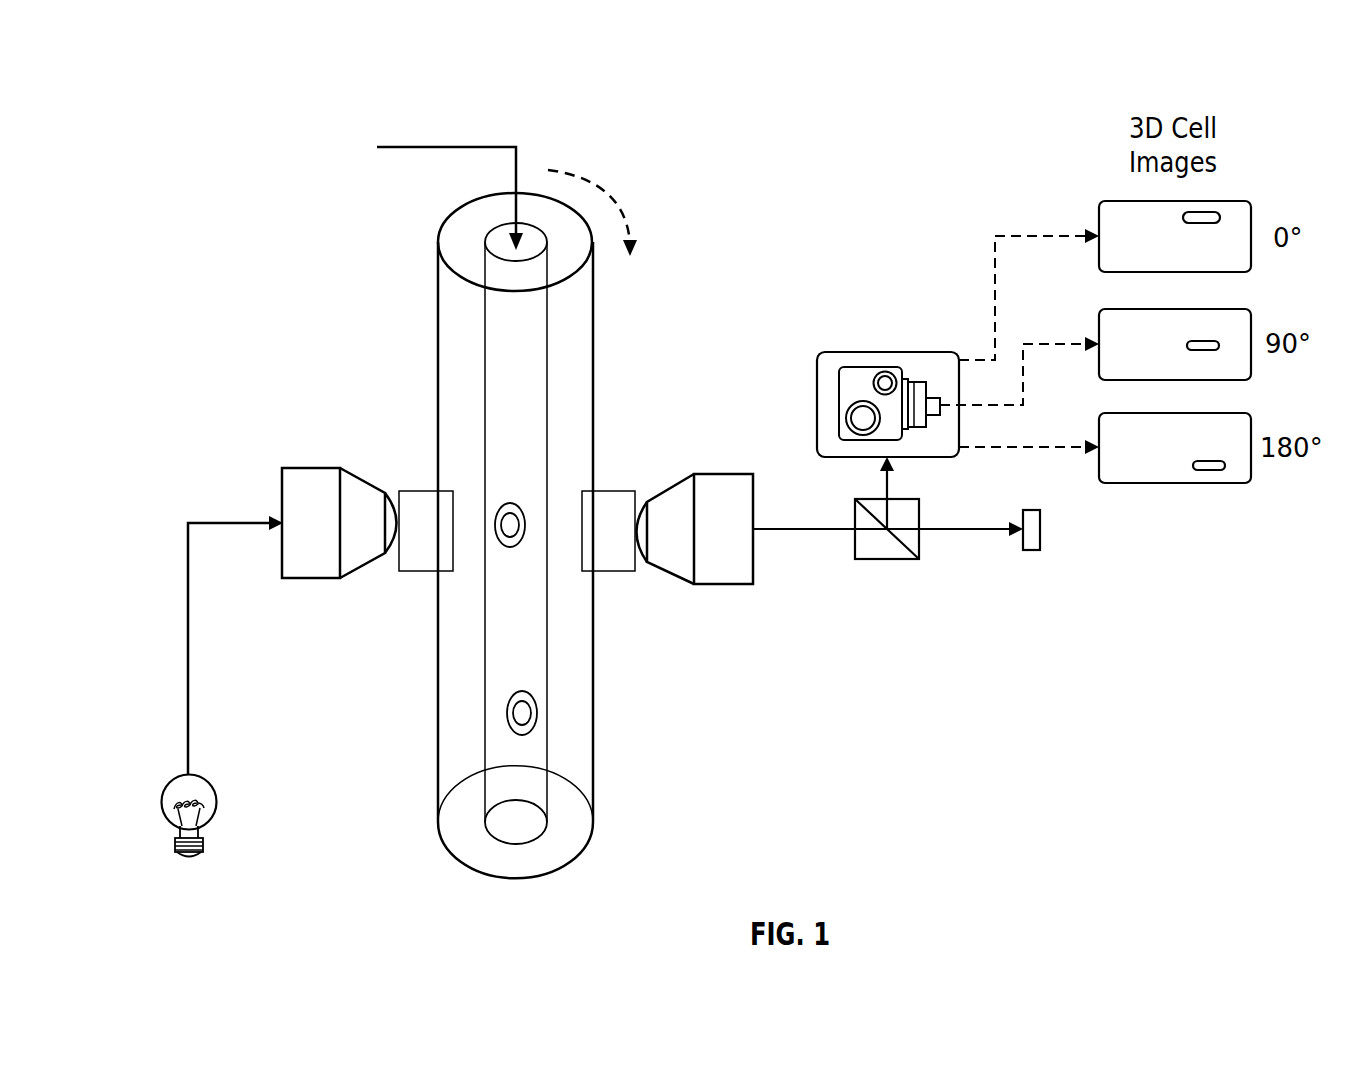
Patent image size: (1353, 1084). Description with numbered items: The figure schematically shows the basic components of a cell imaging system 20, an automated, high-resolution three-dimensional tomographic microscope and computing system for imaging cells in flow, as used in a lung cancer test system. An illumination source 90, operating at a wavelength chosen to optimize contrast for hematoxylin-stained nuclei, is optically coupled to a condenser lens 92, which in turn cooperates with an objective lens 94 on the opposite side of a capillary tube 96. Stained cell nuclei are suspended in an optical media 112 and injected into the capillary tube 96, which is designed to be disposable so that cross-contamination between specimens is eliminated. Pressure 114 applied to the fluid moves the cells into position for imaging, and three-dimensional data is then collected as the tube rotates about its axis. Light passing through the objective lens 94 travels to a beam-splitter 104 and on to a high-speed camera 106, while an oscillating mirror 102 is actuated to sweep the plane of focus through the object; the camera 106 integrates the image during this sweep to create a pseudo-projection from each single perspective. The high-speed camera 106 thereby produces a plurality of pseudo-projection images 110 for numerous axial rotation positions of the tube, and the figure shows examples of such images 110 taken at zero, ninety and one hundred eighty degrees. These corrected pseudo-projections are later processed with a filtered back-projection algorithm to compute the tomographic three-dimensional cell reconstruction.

The cell imaging system 20 is at (226, 82).
The illumination source 90 is at (160, 805).
The condenser lens 92 is at (282, 507).
The objective lens 94 is at (738, 556).
The capillary tube 96 is at (453, 445).
The oscillating mirror 102 is at (1042, 532).
The beam-splitter 104 is at (887, 560).
The high-speed camera 106 is at (882, 350).
The pseudo-projection images 110 is at (1200, 470).
The optical media 112 is at (500, 332).
The pressure 114 is at (433, 147).